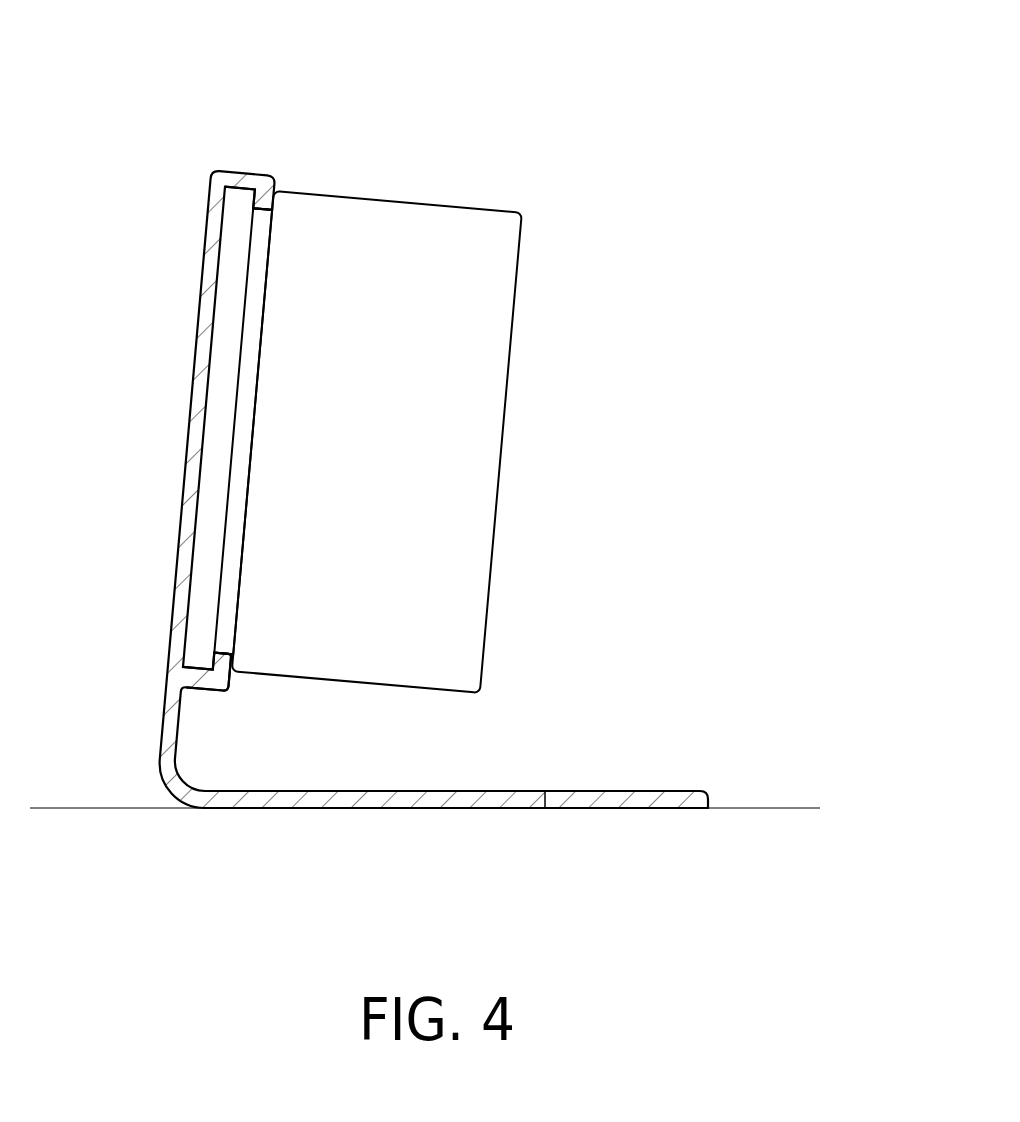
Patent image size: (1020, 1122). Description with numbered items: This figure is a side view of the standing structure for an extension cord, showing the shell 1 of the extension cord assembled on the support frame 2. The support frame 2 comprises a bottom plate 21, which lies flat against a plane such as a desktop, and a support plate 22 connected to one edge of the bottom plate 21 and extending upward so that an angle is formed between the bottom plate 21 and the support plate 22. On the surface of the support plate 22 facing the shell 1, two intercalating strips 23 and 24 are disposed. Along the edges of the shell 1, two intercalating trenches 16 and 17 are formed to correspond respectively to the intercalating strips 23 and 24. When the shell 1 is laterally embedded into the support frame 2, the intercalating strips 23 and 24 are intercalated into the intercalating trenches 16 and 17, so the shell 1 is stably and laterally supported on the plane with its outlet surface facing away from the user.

The shell of an extension cord 1 is at (503, 440).
The support frame 2 is at (399, 491).
The intercalating trench 16 is at (265, 210).
The intercalating trench 17 is at (228, 658).
The bottom plate 21 is at (612, 812).
The support plate 22 is at (176, 578).
The intercalating strip 23 is at (238, 184).
The intercalating strip 24 is at (229, 663).